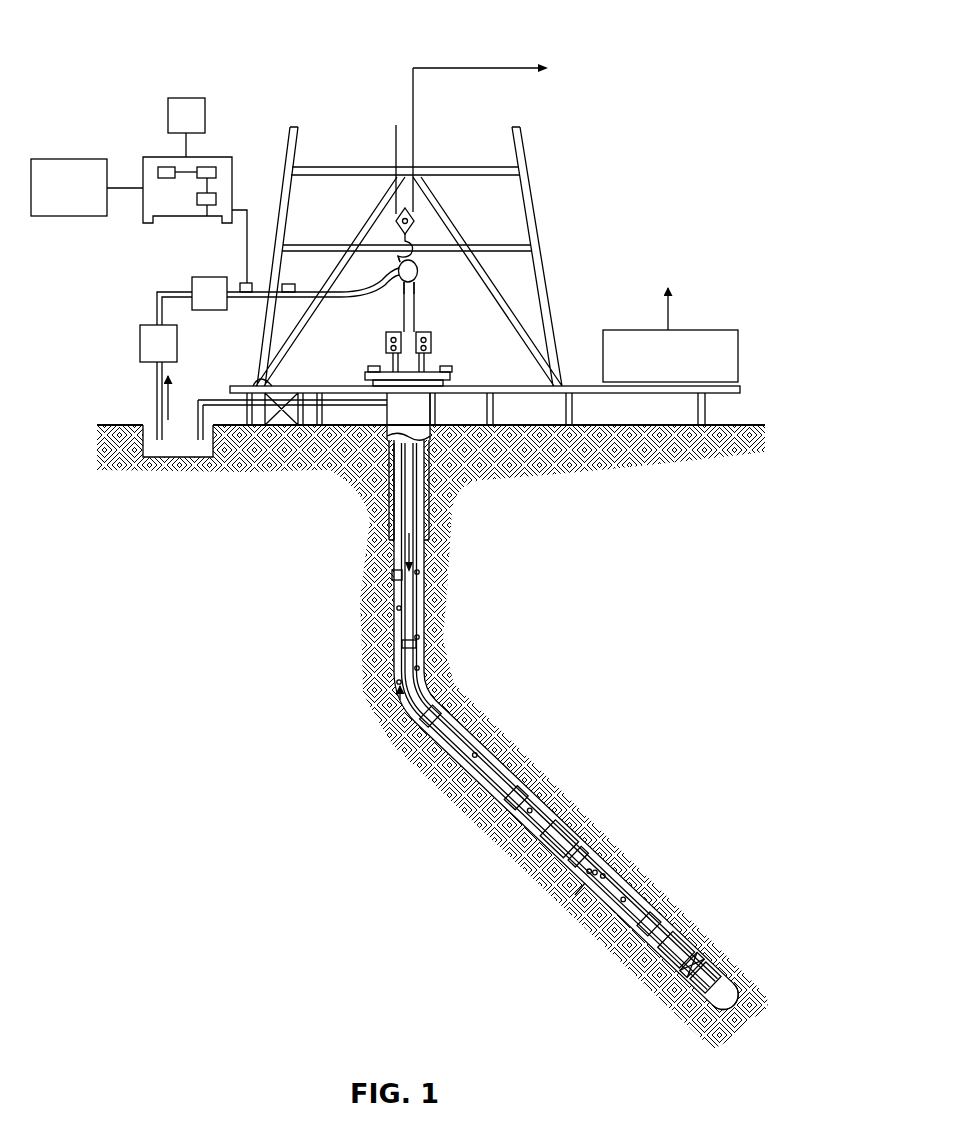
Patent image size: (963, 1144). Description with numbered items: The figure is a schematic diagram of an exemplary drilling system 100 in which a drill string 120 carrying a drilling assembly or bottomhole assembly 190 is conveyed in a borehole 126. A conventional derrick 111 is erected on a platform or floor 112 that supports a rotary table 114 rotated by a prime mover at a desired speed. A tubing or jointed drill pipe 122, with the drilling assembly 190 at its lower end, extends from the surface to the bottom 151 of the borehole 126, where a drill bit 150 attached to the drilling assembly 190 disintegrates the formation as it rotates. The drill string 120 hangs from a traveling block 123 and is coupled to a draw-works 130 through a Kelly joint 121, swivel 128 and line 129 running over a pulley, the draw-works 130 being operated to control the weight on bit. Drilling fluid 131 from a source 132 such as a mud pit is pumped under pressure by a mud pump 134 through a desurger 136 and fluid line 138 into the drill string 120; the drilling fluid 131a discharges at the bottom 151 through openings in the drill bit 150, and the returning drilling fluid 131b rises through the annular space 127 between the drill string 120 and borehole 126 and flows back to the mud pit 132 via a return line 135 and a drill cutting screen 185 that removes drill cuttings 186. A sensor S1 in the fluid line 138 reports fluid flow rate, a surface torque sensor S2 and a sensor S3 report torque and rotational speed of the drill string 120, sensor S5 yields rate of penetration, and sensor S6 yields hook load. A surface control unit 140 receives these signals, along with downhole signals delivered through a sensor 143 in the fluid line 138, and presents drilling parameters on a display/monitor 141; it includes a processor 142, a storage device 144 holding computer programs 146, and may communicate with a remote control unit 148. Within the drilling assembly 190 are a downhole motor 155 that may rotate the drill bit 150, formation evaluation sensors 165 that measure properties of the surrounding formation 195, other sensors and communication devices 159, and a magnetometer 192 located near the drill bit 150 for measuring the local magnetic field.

The drilling system 100 is at (117, 32).
The derrick 111 is at (540, 260).
The platform or floor 112 is at (560, 384).
The rotary table 114 is at (440, 388).
The drill string 120 is at (424, 611).
The Kelly joint 121 is at (417, 318).
The tubing 122 is at (392, 600).
The traveling block 123 is at (415, 224).
The borehole 126 is at (440, 688).
The annular space 127 is at (445, 722).
The swivel 128 is at (398, 278).
The line 129 is at (416, 136).
The draw-works 130 is at (700, 330).
The drilling fluid 131 is at (152, 430).
The drilling fluid 131a is at (400, 540).
The returning drilling fluid 131b is at (380, 714).
The source 132 is at (177, 458).
The mud pump 134 is at (140, 343).
The return line 135 is at (357, 410).
The desurger 136 is at (192, 285).
The fluid line 138 is at (258, 300).
The surface control unit 140 is at (143, 212).
The display/monitor 141 is at (185, 97).
The processor 142 is at (165, 167).
The sensor 143 is at (245, 283).
The storage device 144 is at (211, 166).
The computer programs 146 is at (207, 215).
The remote control unit 148 is at (92, 203).
The drill bit 150 is at (714, 962).
The bottom 151 is at (700, 1005).
The downhole motor 155 is at (495, 780).
The sensors and communication devices 159 is at (690, 965).
The formation evaluation sensors 165 is at (583, 886).
The drill cutting screen 185 is at (270, 385).
The drill cuttings 186 is at (425, 571).
The drilling assembly 190 is at (625, 772).
The magnetometer 192 is at (661, 928).
The formation 195 is at (737, 831).
The sensor S1 is at (288, 284).
The surface torque sensor S2 is at (444, 366).
The sensor S3 is at (378, 366).
The sensor S5 is at (415, 293).
The sensor S6 is at (398, 257).